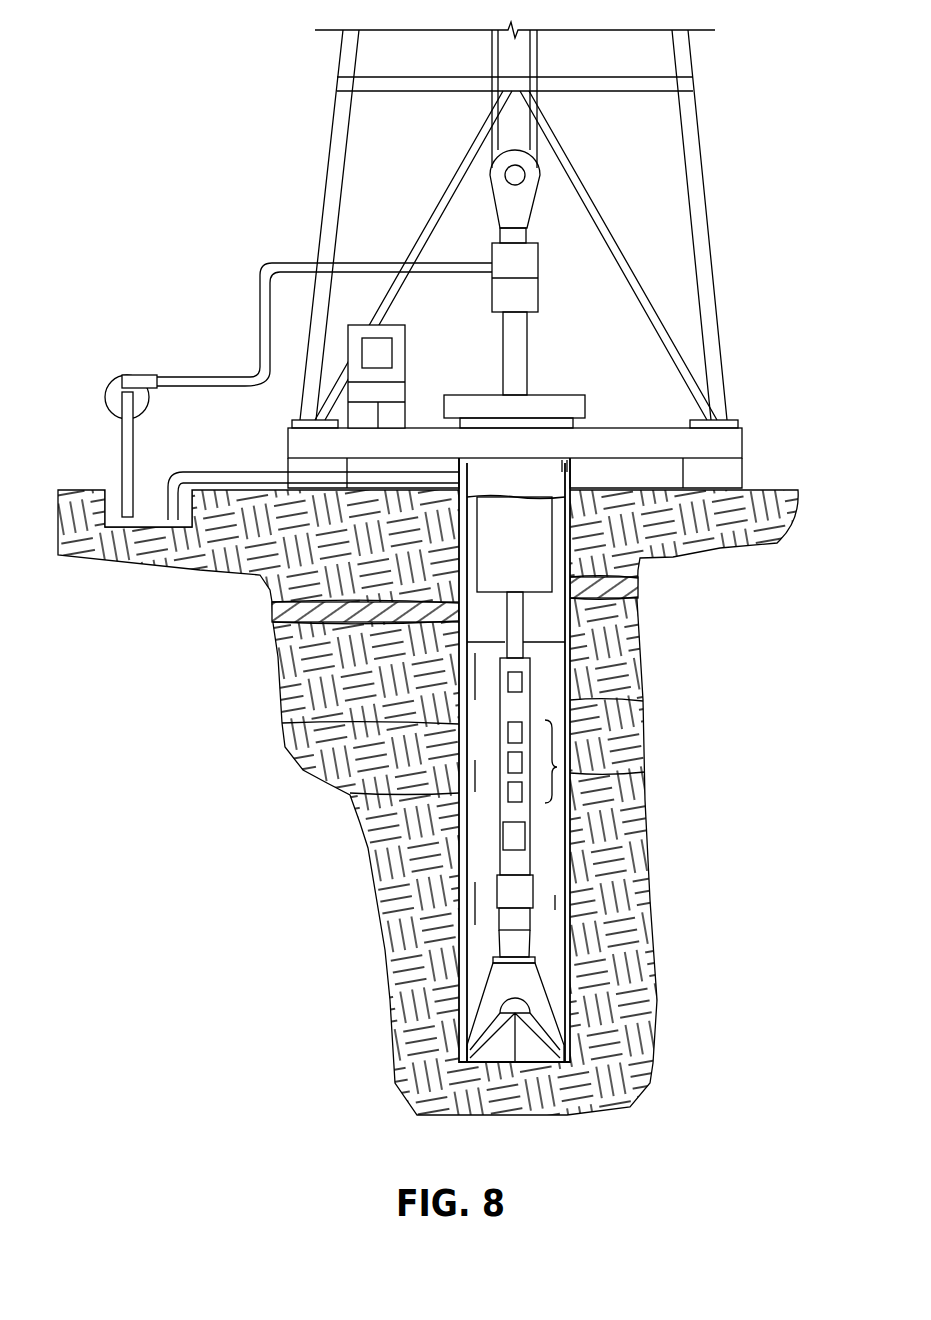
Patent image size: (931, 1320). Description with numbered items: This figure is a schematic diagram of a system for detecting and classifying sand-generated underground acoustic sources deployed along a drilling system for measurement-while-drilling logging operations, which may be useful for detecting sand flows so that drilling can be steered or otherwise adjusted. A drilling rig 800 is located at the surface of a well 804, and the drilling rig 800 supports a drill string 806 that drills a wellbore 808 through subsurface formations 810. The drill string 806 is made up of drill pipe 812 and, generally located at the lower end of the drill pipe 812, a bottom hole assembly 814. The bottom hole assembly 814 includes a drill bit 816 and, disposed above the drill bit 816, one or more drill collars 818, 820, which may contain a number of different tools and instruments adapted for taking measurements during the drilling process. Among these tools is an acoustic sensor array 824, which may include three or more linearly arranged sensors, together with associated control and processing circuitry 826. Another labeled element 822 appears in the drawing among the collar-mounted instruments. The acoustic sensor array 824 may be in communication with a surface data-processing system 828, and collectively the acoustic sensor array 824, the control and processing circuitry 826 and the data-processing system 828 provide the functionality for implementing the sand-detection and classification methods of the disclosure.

The drilling rig 800 is at (166, 58).
The well 804 is at (578, 470).
The drill string 806 is at (548, 821).
The wellbore 808 is at (565, 912).
The subsurface formations 810 is at (247, 603).
The drill pipe 812 is at (552, 563).
The bottom hole assembly 814 is at (747, 1063).
The drill bit 816 is at (540, 1004).
The drill collar 818 is at (518, 620).
The drill collar 820 is at (522, 664).
The upper sensor 822 is at (528, 680).
The acoustic sensor array 824 is at (557, 767).
The control and processing circuitry 826 is at (523, 843).
The surface data-processing system 828 is at (390, 323).